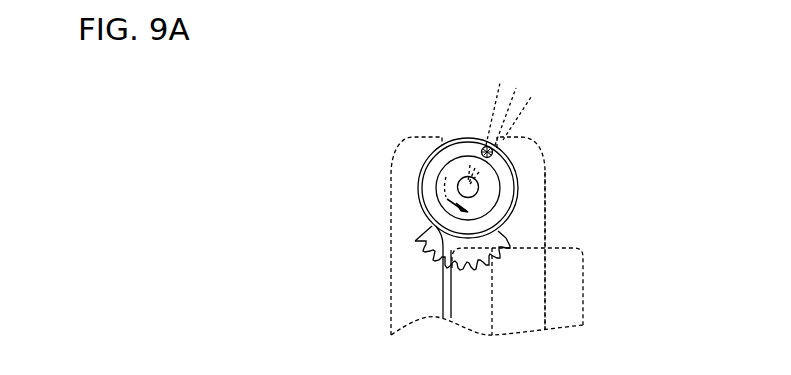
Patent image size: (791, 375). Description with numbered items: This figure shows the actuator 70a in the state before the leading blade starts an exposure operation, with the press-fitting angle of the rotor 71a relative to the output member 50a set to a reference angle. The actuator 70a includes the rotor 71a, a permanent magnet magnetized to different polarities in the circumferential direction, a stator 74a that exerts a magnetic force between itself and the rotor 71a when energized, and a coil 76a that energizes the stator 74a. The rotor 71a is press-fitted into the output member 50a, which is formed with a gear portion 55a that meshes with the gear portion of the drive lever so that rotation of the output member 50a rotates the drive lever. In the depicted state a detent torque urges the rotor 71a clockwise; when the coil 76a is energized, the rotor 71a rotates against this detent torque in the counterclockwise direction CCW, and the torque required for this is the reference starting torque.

The actuator 70a is at (562, 164).
The rotor 71a is at (455, 170).
The stator 74a is at (525, 227).
The coil 76a is at (570, 267).
The output member 50a is at (427, 231).
The gear portion 55a is at (440, 261).
The counterclockwise direction CCW is at (425, 187).